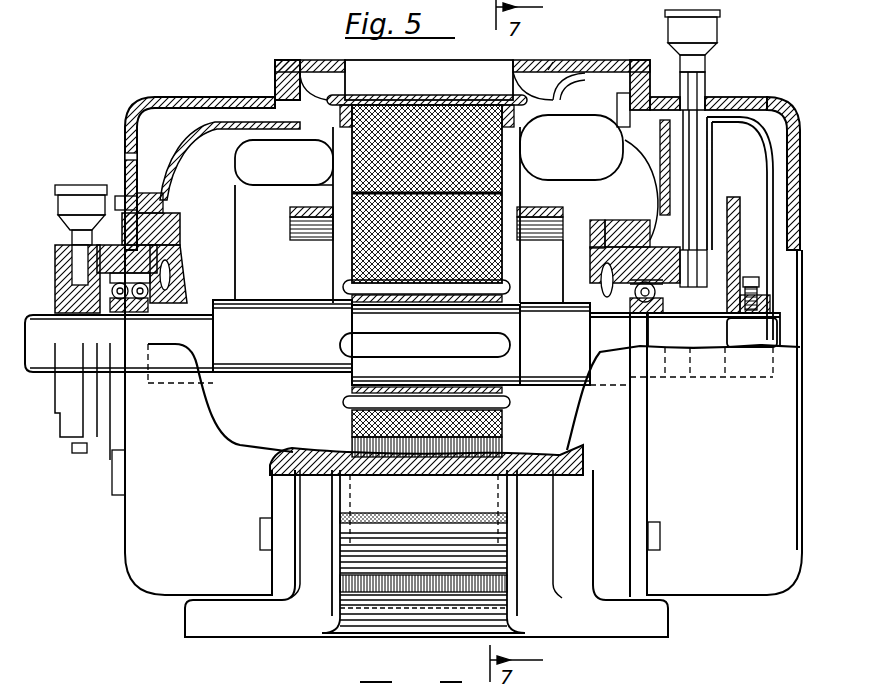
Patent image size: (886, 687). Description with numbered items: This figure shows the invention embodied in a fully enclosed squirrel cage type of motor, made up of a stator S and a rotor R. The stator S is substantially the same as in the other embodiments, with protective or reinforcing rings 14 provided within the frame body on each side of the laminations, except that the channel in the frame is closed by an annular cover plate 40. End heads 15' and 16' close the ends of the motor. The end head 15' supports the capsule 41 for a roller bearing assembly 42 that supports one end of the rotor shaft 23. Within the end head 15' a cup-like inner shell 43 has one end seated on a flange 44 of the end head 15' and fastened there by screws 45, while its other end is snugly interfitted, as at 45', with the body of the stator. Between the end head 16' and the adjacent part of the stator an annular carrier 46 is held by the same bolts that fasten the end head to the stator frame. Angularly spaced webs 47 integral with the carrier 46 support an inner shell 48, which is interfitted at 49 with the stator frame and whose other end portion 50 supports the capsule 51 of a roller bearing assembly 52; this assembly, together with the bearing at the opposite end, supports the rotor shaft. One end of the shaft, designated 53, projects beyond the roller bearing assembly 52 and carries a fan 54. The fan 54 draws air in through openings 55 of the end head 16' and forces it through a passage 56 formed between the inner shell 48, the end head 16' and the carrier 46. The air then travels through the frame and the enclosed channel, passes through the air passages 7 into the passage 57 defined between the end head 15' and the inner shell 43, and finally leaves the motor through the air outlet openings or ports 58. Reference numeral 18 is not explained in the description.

The annular cover plate 40 is at (370, 60).
The annular carrier 46 is at (616, 62).
The insulating plate 18 is at (530, 92).
The end head 15' is at (192, 323).
The end head 16' is at (716, 329).
The passage 57 is at (178, 120).
The air passages 7 is at (278, 76).
The air outlet openings or ports 58 is at (130, 166).
The screws 45 is at (140, 170).
The cup-like inner shell 43 is at (181, 158).
The flange 44 is at (166, 230).
The capsule 41 is at (181, 248).
The roller bearing assembly 42 is at (132, 316).
The rotor shaft 23 is at (252, 346).
The protective or reinforcing rings 14 is at (314, 161).
The interfitted portion of shell 45' is at (297, 196).
The capsule 51 is at (580, 260).
The interfitted portion of inner shell 49 is at (553, 62).
The angularly spaced webs 47 is at (580, 96).
The inner shell 48 is at (636, 150).
The end portion of inner shell 50 is at (642, 216).
The fan 54 is at (740, 228).
The openings 55 is at (793, 272).
The passage 56 is at (640, 118).
The roller bearing assembly 52 is at (650, 332).
The end of the shaft 53 is at (752, 333).
The rotor R is at (560, 344).
The stator S is at (570, 50).